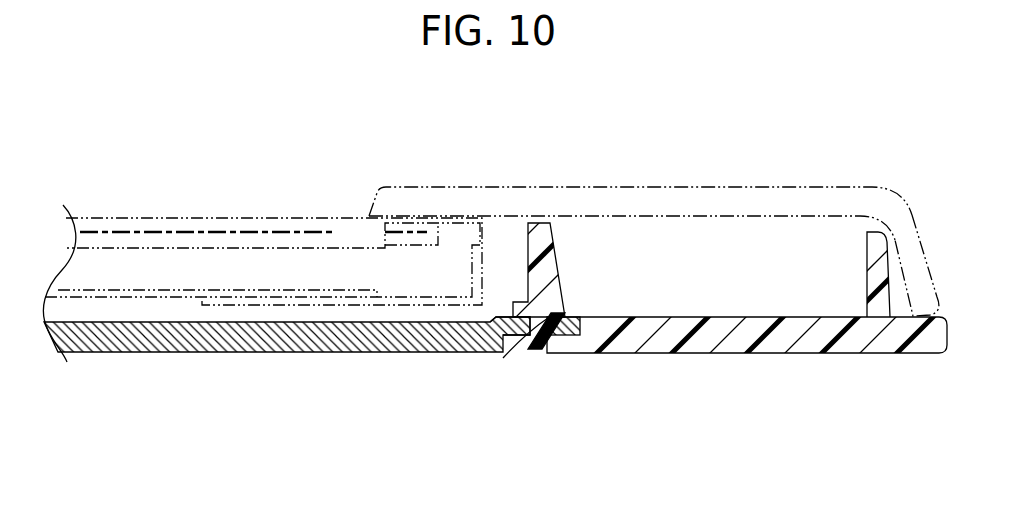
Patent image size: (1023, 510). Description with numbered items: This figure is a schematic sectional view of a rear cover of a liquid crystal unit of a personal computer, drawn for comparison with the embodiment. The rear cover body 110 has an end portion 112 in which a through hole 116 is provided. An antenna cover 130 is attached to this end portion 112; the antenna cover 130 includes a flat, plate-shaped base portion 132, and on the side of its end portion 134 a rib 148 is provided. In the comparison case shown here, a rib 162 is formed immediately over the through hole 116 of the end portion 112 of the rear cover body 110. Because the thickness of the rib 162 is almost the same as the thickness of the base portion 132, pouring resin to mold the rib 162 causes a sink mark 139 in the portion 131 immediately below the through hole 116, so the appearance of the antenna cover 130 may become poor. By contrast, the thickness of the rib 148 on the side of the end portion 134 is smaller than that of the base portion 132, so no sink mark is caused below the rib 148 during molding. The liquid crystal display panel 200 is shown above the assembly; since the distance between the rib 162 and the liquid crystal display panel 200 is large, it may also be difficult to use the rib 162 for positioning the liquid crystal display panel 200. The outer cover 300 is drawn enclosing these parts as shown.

The rear cover body 110 is at (240, 353).
The end portion 112 is at (551, 336).
The through hole 116 is at (523, 348).
The antenna cover 130 is at (767, 353).
The portion immediately below the through hole 131 is at (533, 351).
The base portion 132 is at (704, 343).
The end portion 134 is at (877, 340).
The sink mark 139 is at (534, 352).
The rib 148 is at (892, 260).
The rib 162 is at (544, 267).
The liquid crystal display panel 200 is at (242, 263).
The cover 300 is at (745, 208).